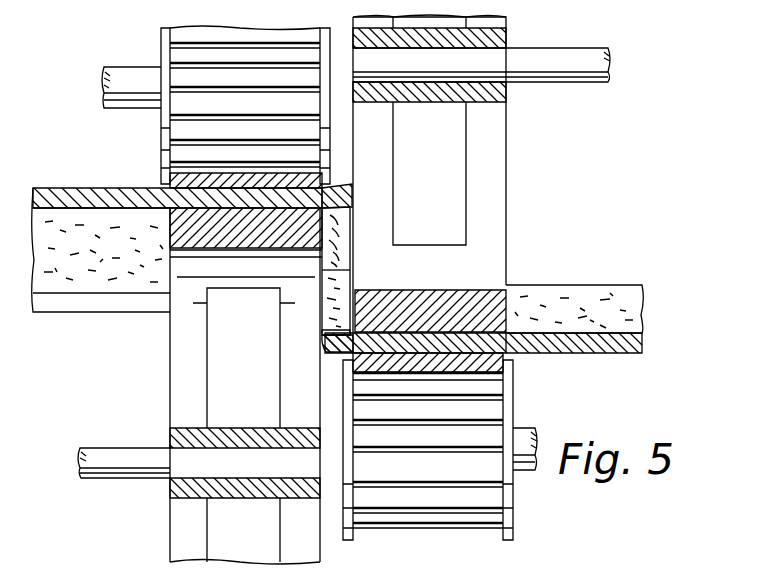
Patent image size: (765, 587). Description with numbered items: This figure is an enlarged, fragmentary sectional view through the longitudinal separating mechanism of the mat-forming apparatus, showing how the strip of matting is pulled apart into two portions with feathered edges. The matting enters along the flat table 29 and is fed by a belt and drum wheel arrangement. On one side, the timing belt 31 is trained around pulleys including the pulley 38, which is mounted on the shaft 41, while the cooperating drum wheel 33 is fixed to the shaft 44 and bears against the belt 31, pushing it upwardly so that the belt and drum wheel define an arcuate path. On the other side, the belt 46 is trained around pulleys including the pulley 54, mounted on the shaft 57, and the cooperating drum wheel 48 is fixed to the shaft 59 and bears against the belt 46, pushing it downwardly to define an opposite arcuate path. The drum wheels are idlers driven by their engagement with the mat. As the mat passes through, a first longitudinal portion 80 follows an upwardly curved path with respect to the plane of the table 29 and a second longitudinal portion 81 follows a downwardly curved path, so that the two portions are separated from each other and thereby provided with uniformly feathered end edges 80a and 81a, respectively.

The flat table 29 is at (106, 313).
The timing belt 31 is at (172, 183).
The drum wheel 33 is at (236, 240).
The pulley 38 is at (160, 42).
The shaft 41 is at (120, 66).
The shaft 44 is at (103, 447).
The belt 46 is at (480, 366).
The drum wheel 48 is at (478, 290).
The pulley 54 is at (513, 517).
The shaft 57 is at (524, 428).
The shaft 59 is at (560, 84).
The first longitudinal portion 80 is at (322, 197).
The feathered end edge 80a is at (350, 192).
The second longitudinal portion 81 is at (353, 358).
The feathered end edge 81a is at (335, 342).